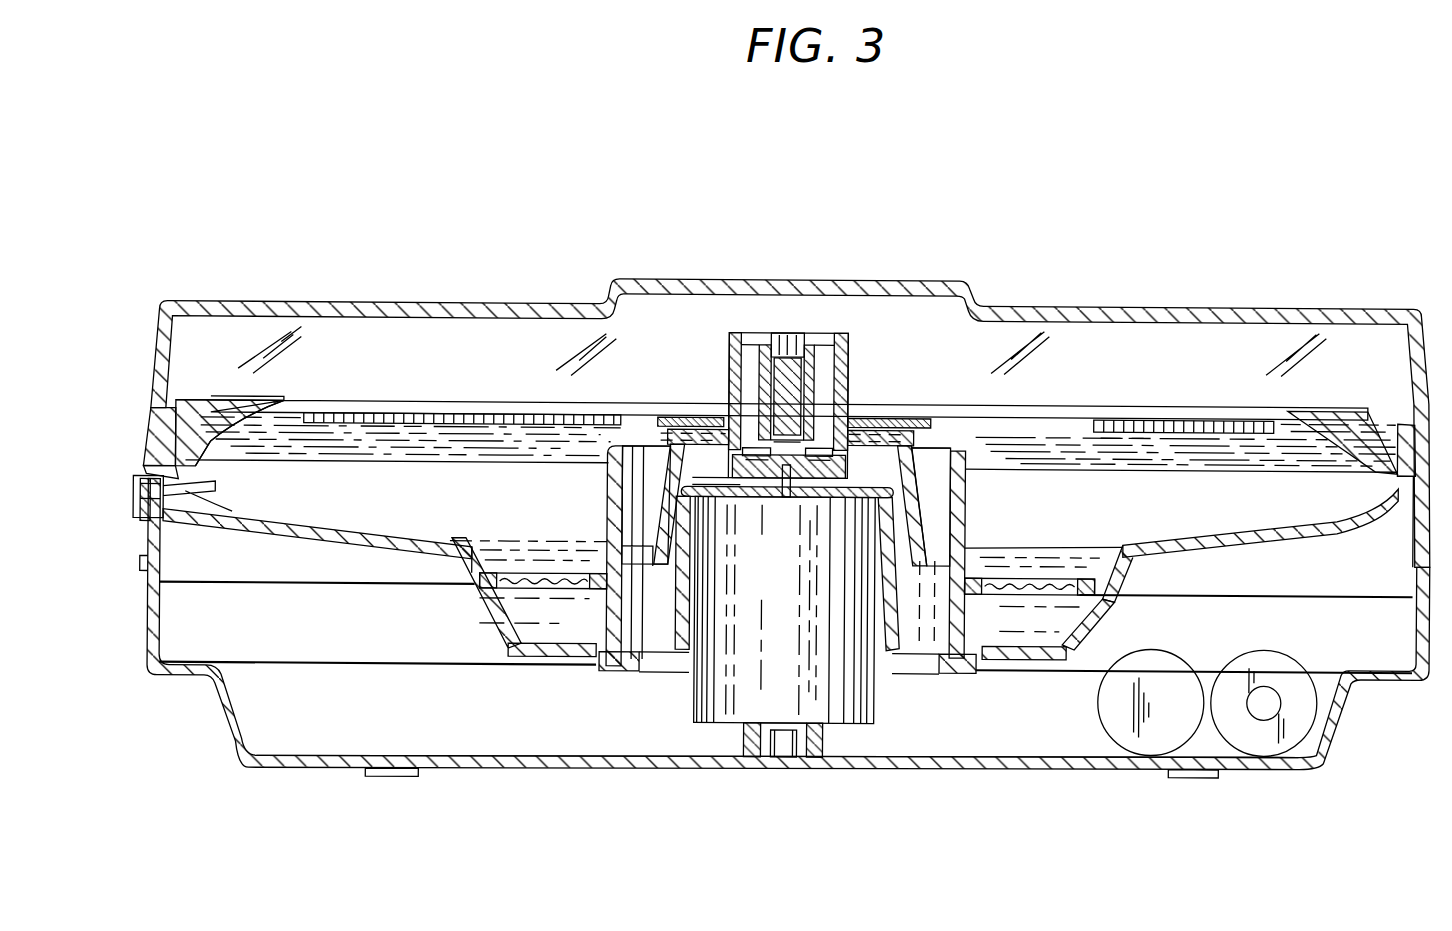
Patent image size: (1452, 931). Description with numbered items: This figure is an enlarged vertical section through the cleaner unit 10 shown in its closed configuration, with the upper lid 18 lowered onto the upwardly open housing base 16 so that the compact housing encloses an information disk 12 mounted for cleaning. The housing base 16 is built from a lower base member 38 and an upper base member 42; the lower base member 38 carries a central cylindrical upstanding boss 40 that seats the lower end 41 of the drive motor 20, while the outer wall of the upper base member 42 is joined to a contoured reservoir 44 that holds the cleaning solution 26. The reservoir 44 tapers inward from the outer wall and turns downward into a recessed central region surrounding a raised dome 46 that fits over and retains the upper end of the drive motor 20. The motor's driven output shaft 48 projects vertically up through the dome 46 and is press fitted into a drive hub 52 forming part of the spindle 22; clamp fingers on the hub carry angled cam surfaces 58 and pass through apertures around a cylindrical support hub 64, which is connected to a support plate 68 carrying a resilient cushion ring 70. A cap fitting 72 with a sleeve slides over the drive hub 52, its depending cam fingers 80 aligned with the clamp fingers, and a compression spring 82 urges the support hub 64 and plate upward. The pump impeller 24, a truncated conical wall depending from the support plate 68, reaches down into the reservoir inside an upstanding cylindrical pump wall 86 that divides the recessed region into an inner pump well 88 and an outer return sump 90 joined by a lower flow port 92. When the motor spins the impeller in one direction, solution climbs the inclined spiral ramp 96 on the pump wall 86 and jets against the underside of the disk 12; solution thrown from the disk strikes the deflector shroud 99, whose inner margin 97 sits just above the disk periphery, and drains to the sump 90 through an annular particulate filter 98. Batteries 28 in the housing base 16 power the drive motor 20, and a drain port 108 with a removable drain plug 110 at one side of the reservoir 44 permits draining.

The cleaner unit 10 is at (1319, 292).
The information disk 12 is at (495, 413).
The housing base 16 is at (230, 729).
The upper lid 18 is at (372, 305).
The drive motor 20 is at (815, 614).
The spindle 22 is at (798, 355).
The pump impeller 24 is at (920, 450).
The cleaning solution 26 is at (487, 545).
The batteries 28 is at (1242, 762).
The lower base member 38 is at (465, 745).
The central cylindrical upstanding boss 40 is at (822, 775).
The lower end of the drive motor 41 is at (776, 745).
The upper base member 42 is at (150, 568).
The reservoir 44 is at (306, 541).
The raised dome 46 is at (700, 612).
The driven output shaft 48 is at (775, 496).
The drive hub 52 is at (790, 345).
The cam surface 58 is at (855, 395).
The support hub 64 is at (745, 448).
The support plate 68 is at (745, 432).
The resilient cushion ring 70 is at (780, 437).
The cap fitting 72 is at (733, 358).
The cam fingers 80 is at (850, 357).
The compression spring 82 is at (832, 463).
The pump wall 86 is at (973, 468).
The pump well 88 is at (660, 612).
The return sump 90 is at (541, 610).
The lower flow port 92 is at (915, 655).
The inclined spiral ramp 96 is at (960, 545).
The inner margin 97 is at (290, 402).
The annular particulate filter 98 is at (1035, 575).
The deflector shroud 99 is at (222, 400).
The drain port 108 is at (150, 537).
The drain plug 110 is at (135, 492).